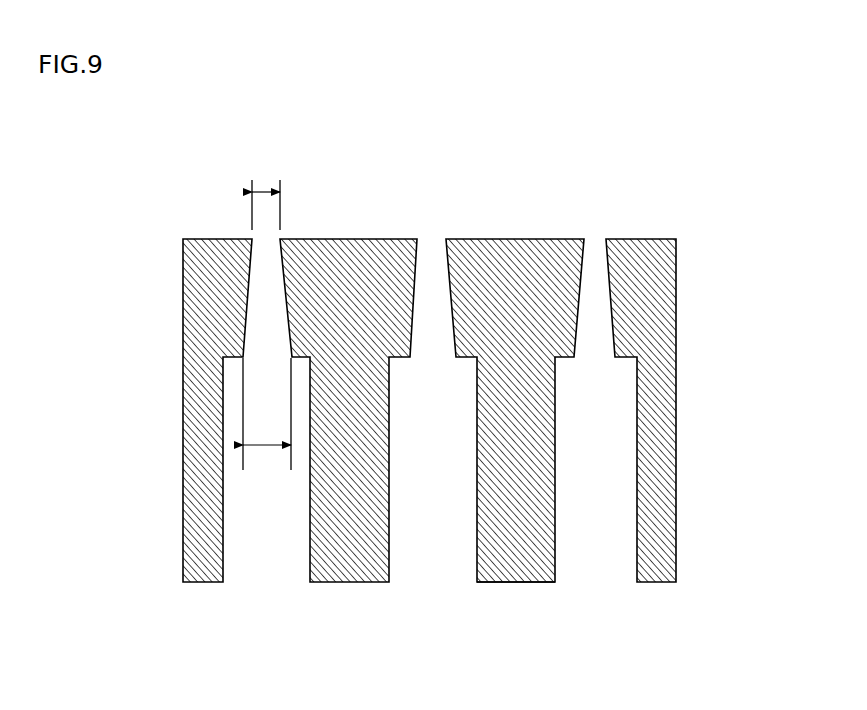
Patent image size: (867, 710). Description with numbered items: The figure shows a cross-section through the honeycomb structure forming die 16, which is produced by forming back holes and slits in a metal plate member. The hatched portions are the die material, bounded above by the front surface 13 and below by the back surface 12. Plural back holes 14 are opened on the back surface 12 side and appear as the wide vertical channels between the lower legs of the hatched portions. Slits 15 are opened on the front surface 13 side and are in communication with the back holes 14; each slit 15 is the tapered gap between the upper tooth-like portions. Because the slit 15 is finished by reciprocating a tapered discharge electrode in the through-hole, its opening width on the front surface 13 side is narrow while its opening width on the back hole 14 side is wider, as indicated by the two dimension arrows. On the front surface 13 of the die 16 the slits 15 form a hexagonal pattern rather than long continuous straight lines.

The back surface 12 is at (500, 582).
The front surface 13 is at (515, 239).
The back hole 14 is at (600, 533).
The slit 15 is at (267, 277).
The honeycomb structure forming die 16 is at (757, 150).